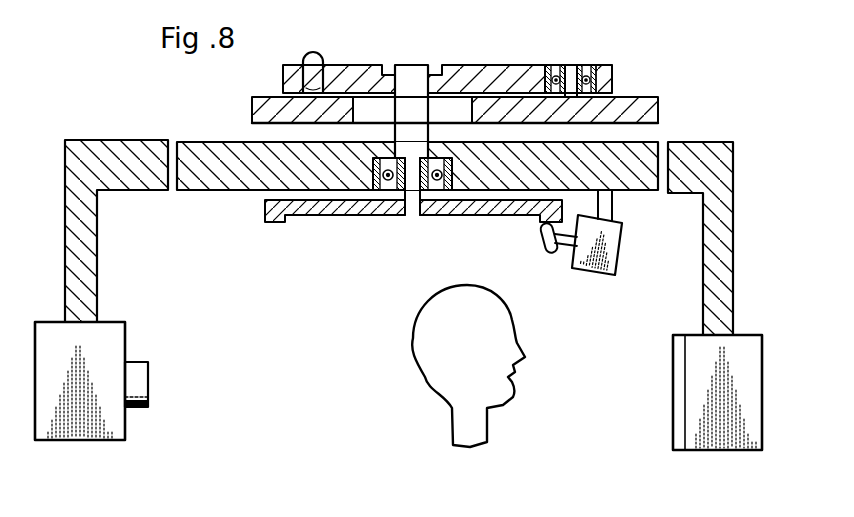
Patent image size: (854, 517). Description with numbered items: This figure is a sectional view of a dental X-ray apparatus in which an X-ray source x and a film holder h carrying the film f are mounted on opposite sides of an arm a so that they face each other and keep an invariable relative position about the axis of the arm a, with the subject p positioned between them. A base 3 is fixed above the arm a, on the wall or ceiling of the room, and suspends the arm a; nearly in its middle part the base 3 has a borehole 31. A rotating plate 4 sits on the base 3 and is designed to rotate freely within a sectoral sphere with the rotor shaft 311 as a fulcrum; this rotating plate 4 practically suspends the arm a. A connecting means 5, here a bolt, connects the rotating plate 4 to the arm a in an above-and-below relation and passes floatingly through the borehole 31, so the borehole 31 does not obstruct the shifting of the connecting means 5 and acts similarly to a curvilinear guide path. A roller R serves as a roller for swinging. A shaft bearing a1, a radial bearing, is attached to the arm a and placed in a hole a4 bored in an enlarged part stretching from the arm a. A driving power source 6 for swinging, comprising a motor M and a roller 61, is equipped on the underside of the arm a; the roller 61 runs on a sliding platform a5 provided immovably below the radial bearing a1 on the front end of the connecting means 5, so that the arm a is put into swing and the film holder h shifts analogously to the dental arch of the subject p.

The base 3 is at (645, 107).
The borehole 31 is at (370, 108).
The rotor shaft 311 is at (572, 72).
The rotating plate 4 is at (493, 78).
The connecting means 5 is at (420, 75).
The roller for swinging R is at (322, 62).
The arm a is at (225, 183).
The shaft bearing a1 is at (388, 185).
The hole a4 is at (373, 160).
The sliding platform a5 is at (450, 205).
The driving power source 6 is at (590, 265).
The roller 61 is at (547, 257).
The motor M is at (617, 263).
The subject p is at (425, 377).
The X-ray source x is at (148, 397).
The film f is at (673, 422).
The film holder h is at (718, 448).